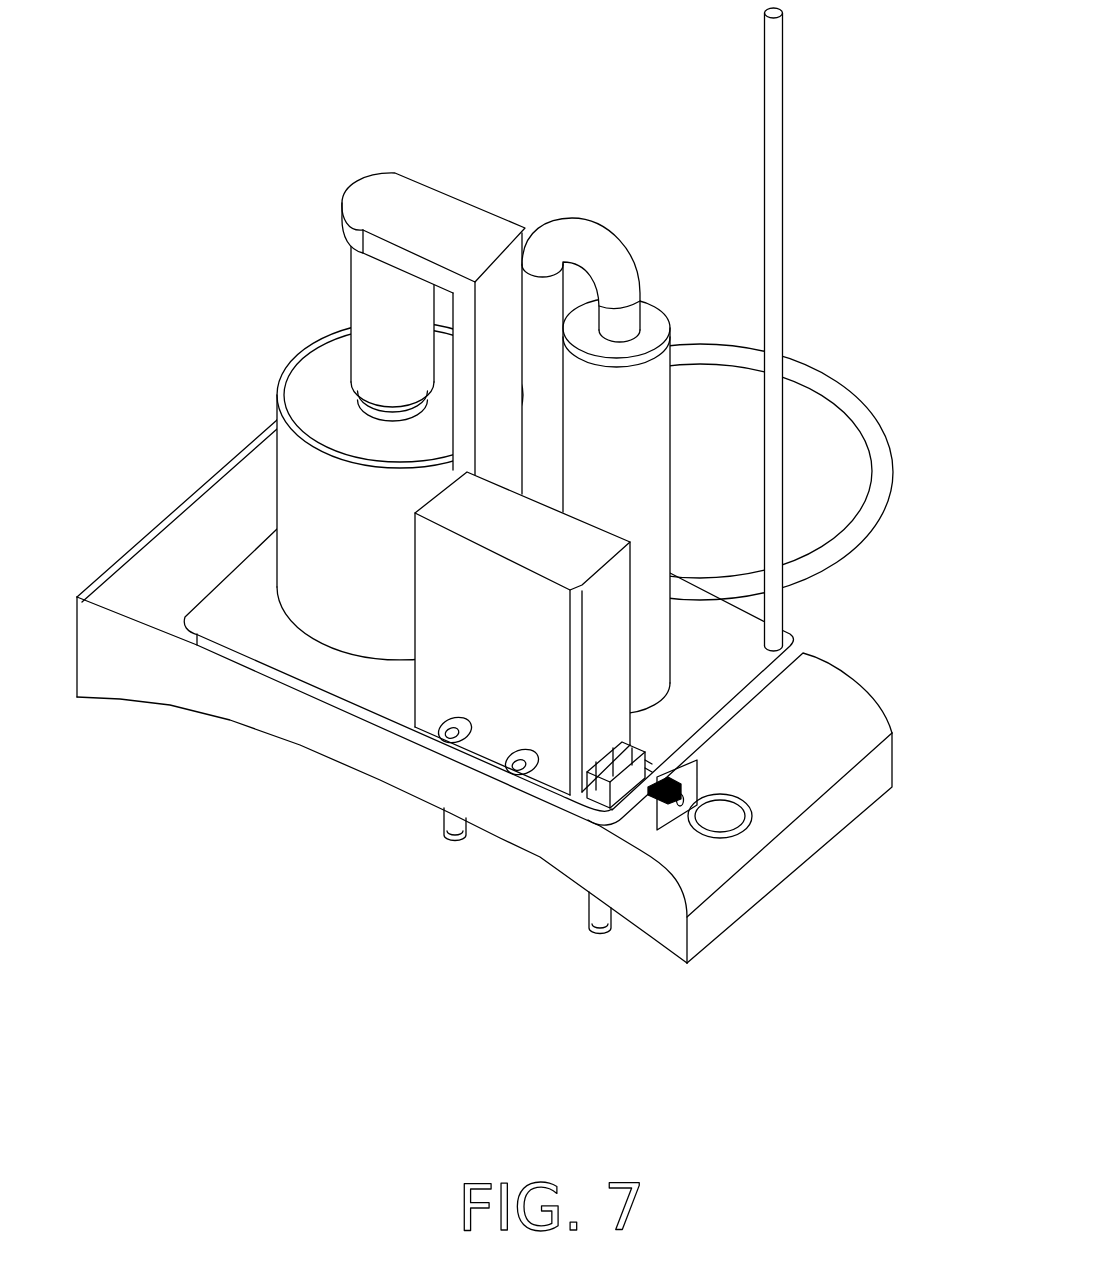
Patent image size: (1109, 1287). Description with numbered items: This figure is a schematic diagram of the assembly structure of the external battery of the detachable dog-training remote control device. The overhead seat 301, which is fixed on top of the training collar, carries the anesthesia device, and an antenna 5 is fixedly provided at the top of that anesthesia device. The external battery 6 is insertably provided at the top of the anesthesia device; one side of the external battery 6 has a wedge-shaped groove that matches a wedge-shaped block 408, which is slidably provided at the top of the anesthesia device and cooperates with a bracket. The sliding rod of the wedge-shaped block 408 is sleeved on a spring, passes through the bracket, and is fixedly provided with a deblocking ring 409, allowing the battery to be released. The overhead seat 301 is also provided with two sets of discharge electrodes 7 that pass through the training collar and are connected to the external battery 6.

The antenna 5 is at (773, 308).
The external battery 6 is at (437, 704).
The discharge electrodes 7 is at (450, 823).
The overhead seat 301 is at (827, 722).
The wedge-shaped block 408 is at (597, 792).
The deblocking ring 409 is at (703, 830).